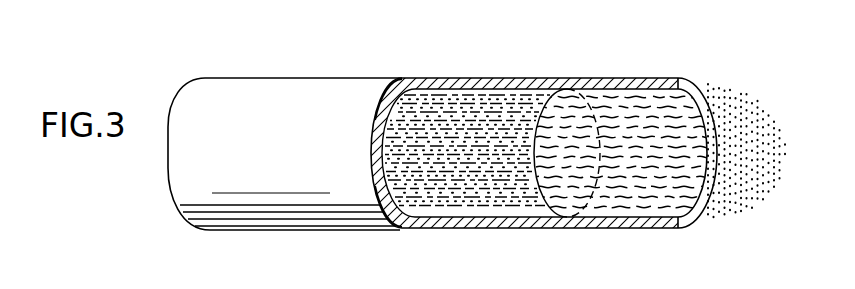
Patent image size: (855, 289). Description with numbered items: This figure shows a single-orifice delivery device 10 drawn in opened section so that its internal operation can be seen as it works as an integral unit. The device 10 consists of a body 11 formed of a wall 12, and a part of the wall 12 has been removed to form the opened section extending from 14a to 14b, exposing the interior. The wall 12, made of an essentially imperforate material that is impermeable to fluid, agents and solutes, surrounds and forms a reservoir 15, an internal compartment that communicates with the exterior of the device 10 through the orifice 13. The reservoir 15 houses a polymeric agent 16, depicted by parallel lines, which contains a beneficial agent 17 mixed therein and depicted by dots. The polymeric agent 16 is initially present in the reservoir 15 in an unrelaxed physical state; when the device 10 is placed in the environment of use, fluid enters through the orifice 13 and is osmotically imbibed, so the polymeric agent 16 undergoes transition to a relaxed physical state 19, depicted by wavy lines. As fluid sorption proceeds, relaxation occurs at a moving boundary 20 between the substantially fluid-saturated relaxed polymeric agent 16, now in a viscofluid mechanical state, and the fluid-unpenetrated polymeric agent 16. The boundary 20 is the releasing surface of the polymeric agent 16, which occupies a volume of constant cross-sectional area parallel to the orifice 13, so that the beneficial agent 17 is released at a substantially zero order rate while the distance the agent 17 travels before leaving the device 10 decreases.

The device 10 is at (651, 48).
The body 11 is at (177, 202).
The wall 12 is at (490, 84).
The orifice 13 is at (692, 93).
The opened section edge 14a is at (403, 79).
The opened section edge 14b is at (403, 228).
The reservoir 15 is at (386, 164).
The polymeric agent 16 is at (396, 133).
The beneficial agent 17 is at (407, 146).
The relaxed physical state 19 is at (645, 207).
The moving boundary 20 is at (539, 186).